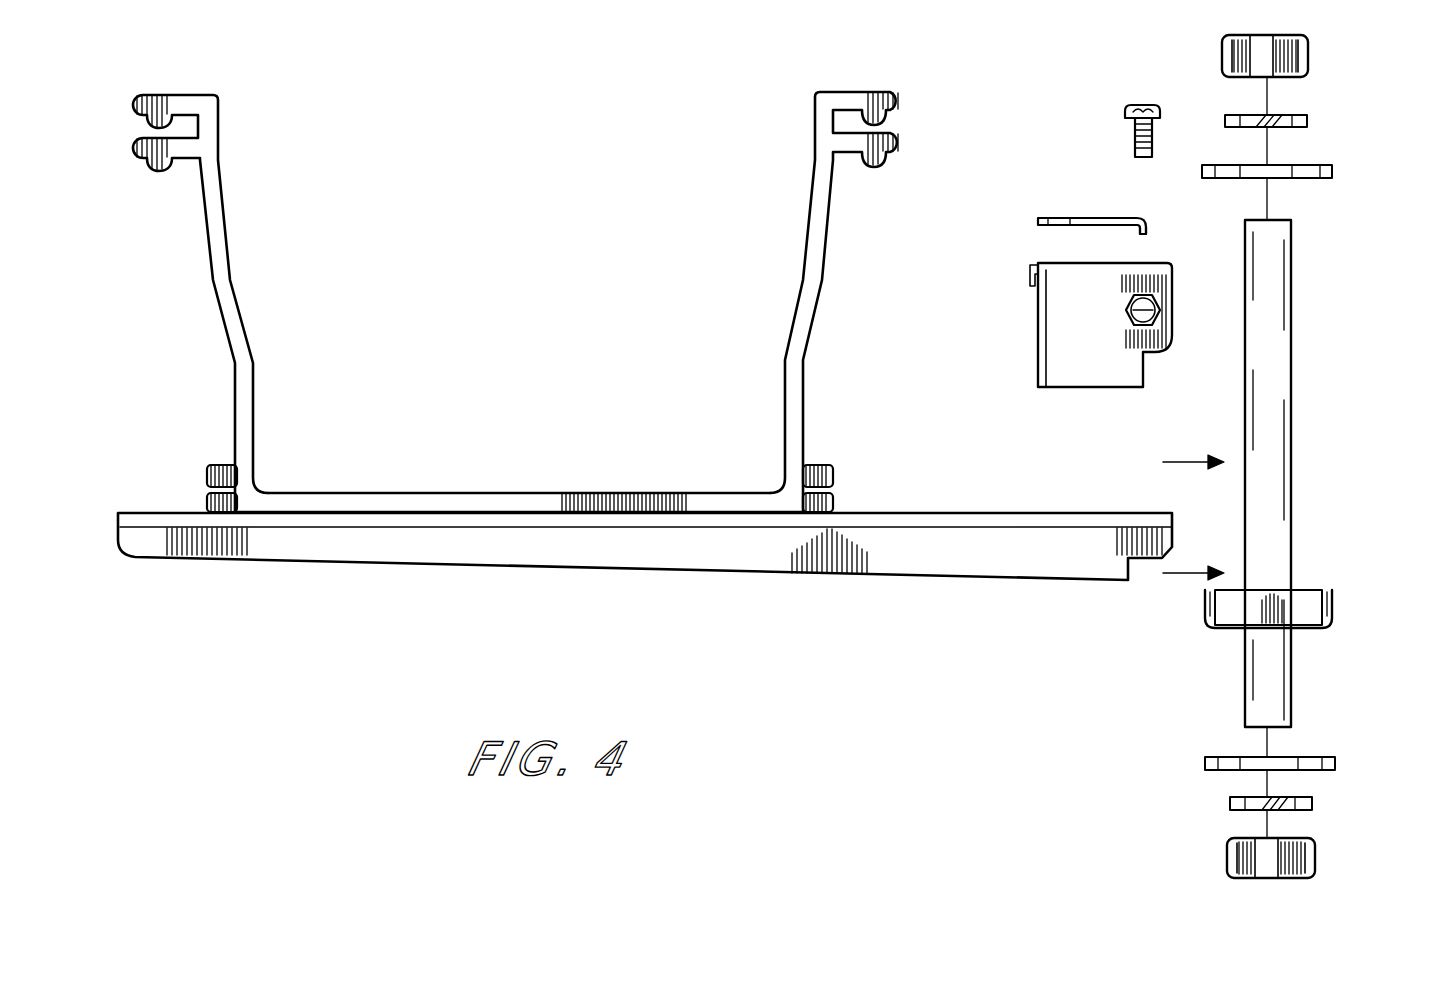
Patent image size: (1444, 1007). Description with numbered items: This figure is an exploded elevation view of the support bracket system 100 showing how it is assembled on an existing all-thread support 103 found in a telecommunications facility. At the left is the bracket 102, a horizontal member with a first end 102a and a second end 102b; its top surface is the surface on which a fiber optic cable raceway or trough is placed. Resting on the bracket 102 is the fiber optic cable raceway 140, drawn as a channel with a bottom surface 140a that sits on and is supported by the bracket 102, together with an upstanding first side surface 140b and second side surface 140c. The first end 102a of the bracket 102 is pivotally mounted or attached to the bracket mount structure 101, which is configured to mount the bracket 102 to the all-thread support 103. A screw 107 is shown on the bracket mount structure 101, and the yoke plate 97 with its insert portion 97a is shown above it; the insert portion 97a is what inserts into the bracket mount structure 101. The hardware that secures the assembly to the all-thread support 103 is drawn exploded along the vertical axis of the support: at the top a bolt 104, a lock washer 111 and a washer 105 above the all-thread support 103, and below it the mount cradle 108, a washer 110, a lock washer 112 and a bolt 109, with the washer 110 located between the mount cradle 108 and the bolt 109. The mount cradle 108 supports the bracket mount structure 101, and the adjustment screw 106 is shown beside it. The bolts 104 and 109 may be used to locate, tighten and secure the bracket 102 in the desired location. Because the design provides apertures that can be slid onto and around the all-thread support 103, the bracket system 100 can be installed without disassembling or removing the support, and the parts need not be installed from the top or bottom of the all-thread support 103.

The support bracket system 100 is at (645, 384).
The bracket 102 is at (635, 559).
The first end 102a is at (1100, 561).
The second end 102b is at (195, 534).
The fiber optic cable raceway 140 is at (515, 318).
The bottom surface 140a is at (340, 521).
The first side surface 140b is at (358, 175).
The second side surface 140c is at (775, 342).
The yoke plate 97 is at (1064, 217).
The insert portion 97a is at (1226, 250).
The bracket mount structure 101 is at (1078, 318).
The all-thread support 103 is at (1280, 324).
The bolt 104 is at (1248, 52).
The washer 105 is at (1335, 171).
The adjustment screw 106 is at (1128, 104).
The screw 107 is at (1162, 308).
The mount cradle 108 is at (1305, 604).
The bolt 109 is at (1296, 858).
The washer 110 is at (1310, 756).
The lock washer 111 is at (1310, 121).
The lock washer 112 is at (1228, 801).